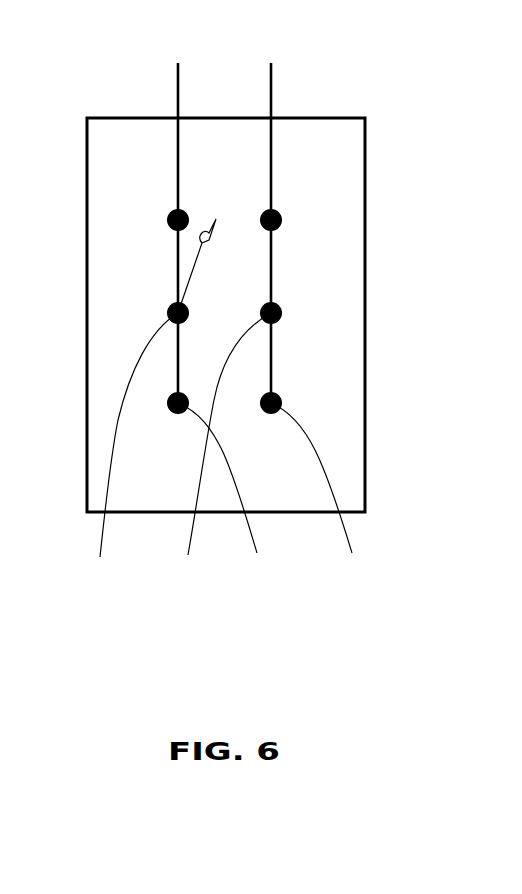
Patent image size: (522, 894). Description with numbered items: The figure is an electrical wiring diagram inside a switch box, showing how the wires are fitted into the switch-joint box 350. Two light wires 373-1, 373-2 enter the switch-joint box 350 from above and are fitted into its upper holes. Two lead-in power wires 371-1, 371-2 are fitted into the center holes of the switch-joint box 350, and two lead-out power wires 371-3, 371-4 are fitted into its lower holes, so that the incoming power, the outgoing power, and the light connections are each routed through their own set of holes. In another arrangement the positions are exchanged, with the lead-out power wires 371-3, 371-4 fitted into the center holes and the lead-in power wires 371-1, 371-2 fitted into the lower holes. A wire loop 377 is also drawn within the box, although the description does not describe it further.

The switch-joint box 350 is at (261, 666).
The light wire 373-1 is at (180, 92).
The light wire 373-2 is at (272, 92).
The connection wire loop 377 is at (192, 275).
The lead-in power wire 371-1 is at (126, 447).
The lead-in power wire 371-2 is at (219, 447).
The lead-out power wire 371-3 is at (234, 492).
The lead-out power wire 371-4 is at (326, 492).